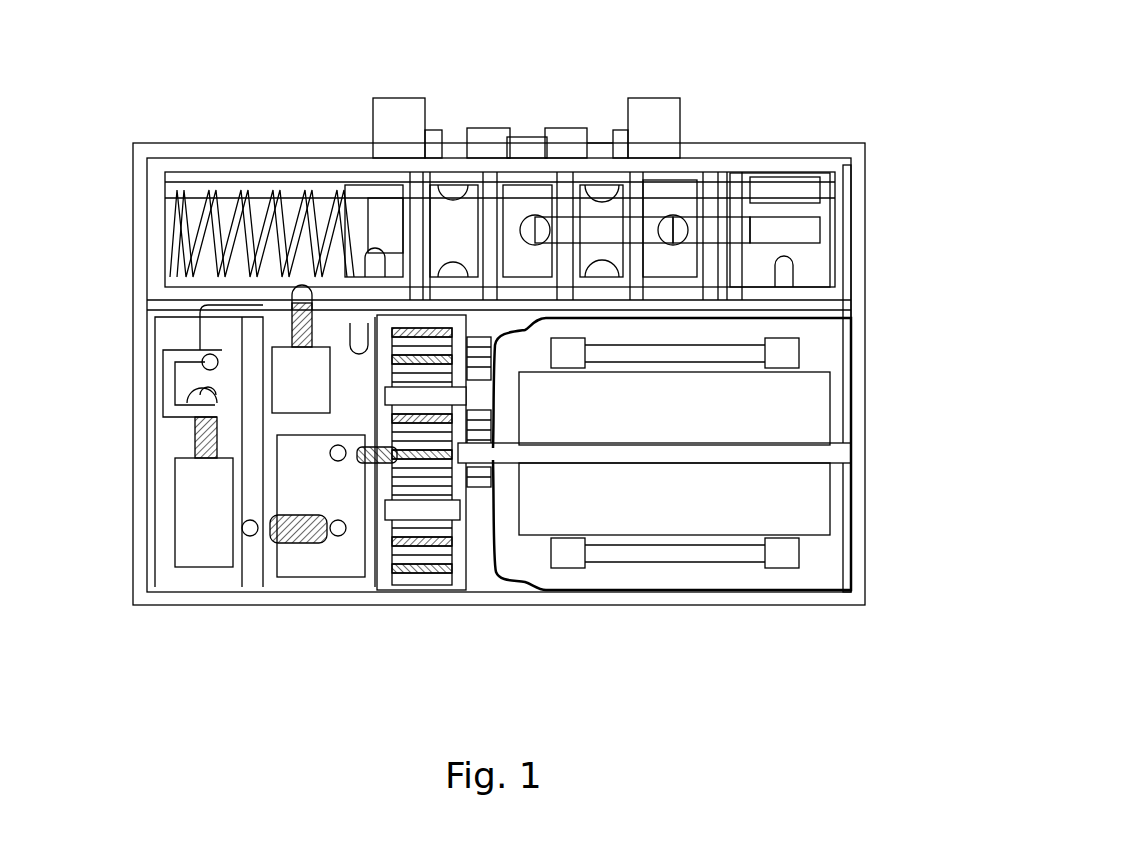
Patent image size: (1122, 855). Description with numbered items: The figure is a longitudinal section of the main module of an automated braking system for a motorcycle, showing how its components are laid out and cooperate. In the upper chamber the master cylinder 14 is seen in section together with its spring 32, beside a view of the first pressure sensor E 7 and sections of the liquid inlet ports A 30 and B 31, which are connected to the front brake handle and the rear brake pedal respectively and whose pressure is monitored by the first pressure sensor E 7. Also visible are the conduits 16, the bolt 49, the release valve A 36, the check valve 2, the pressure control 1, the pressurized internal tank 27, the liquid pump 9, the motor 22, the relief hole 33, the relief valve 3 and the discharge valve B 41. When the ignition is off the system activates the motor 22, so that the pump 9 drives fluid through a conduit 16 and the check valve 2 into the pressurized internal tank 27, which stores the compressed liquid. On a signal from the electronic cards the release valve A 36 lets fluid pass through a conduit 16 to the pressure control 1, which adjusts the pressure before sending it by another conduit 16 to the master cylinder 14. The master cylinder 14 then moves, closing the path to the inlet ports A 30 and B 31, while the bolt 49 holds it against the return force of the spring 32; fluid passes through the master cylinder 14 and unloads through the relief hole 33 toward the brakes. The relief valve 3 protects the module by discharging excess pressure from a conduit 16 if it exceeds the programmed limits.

The pressure control 1 is at (200, 480).
The check valve 2 is at (372, 462).
The relief valve 3 is at (782, 173).
The first pressure sensor 7 is at (400, 98).
The liquid pump 9 is at (412, 563).
The master cylinder 14 is at (457, 230).
The conduits 16 is at (366, 185).
The motor 22 is at (770, 512).
The pressurized internal tank 27 is at (367, 465).
The liquid inlet port A 30 is at (455, 126).
The liquid inlet port B 31 is at (602, 126).
The spring 32 is at (262, 190).
The relief hole 33 is at (540, 232).
The release valve 36 is at (302, 577).
The discharge valve 41 is at (792, 227).
The bolt 49 is at (287, 380).